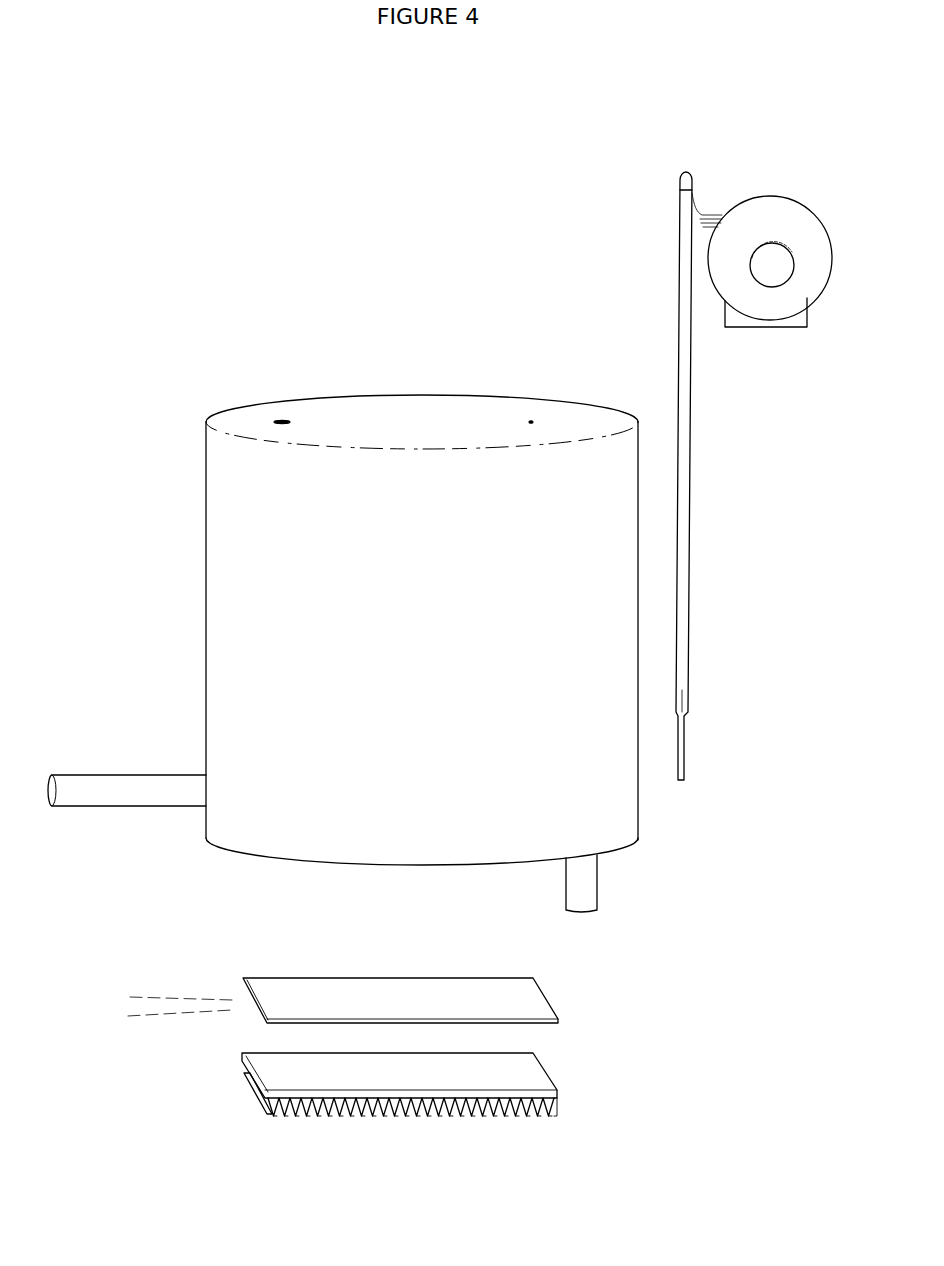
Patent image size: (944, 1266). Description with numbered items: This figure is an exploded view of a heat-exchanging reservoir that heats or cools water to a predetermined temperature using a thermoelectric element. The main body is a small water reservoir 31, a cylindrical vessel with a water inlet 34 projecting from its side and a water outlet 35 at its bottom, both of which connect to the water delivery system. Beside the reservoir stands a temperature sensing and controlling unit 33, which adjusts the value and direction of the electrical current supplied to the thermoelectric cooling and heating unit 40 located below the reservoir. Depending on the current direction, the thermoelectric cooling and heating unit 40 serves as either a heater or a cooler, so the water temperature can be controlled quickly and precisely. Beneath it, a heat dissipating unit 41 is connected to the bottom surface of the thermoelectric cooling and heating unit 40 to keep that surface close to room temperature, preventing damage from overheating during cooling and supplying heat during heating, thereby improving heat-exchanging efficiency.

The small water reservoir 31 is at (240, 592).
The temperature sensing and controlling unit 33 is at (704, 330).
The water inlet 34 is at (197, 786).
The water outlet 35 is at (585, 884).
The thermoelectric cooling and heating unit 40 is at (297, 995).
The heat dissipating unit 41 is at (513, 1083).